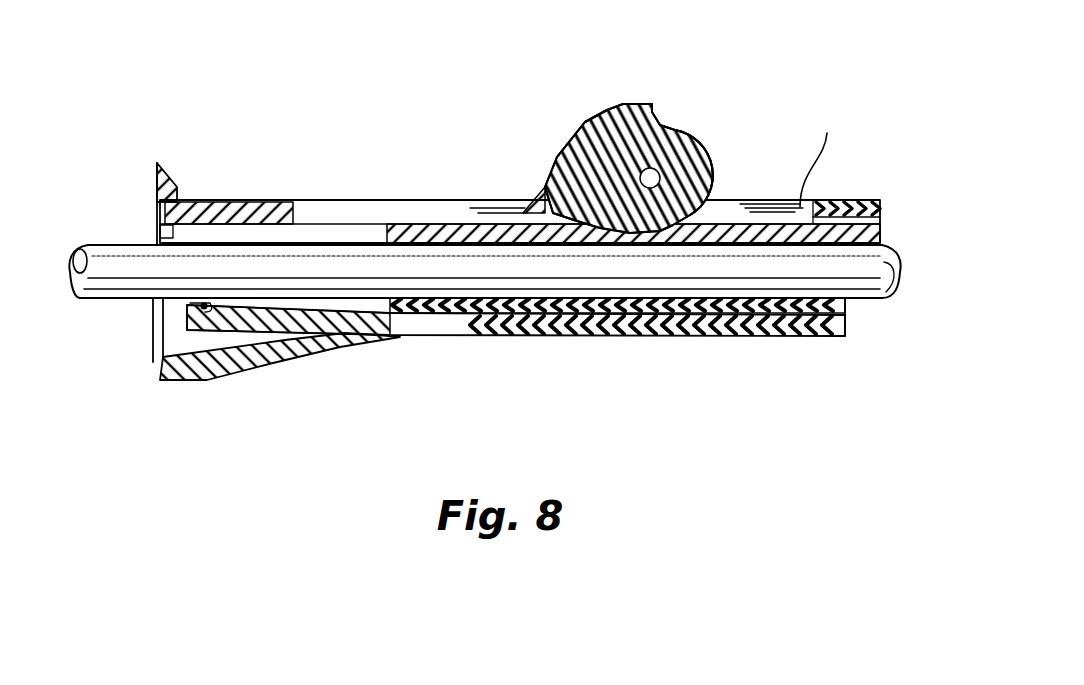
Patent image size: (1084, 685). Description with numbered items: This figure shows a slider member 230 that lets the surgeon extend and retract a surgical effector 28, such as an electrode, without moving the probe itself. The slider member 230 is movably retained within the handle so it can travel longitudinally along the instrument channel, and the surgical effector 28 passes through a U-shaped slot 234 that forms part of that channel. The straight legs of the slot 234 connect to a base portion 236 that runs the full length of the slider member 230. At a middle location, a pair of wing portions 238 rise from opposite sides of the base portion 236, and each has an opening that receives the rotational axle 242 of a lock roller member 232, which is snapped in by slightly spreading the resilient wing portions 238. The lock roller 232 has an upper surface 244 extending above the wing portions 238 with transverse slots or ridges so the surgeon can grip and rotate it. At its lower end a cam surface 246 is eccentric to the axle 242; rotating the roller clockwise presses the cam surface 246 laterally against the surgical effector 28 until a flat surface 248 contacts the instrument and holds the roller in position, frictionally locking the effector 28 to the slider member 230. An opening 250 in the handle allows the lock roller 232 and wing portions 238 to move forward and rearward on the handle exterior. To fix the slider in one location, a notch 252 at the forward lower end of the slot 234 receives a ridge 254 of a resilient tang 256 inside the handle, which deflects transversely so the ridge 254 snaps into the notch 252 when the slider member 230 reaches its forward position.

The surgical effector 28 is at (120, 240).
The slider member 230 is at (797, 317).
The lock roller member 232 is at (603, 113).
The slot 234 is at (493, 308).
The base portion 236 is at (485, 225).
The wing portions 238 is at (683, 165).
The rotational axle 242 is at (676, 135).
The upper surface 244 is at (557, 145).
The cam surface 246 is at (630, 235).
The flat surface 248 is at (723, 203).
The opening 250 is at (404, 210).
The notch 252 is at (437, 308).
The ridge 254 is at (205, 306).
The resilient tang 256 is at (300, 360).